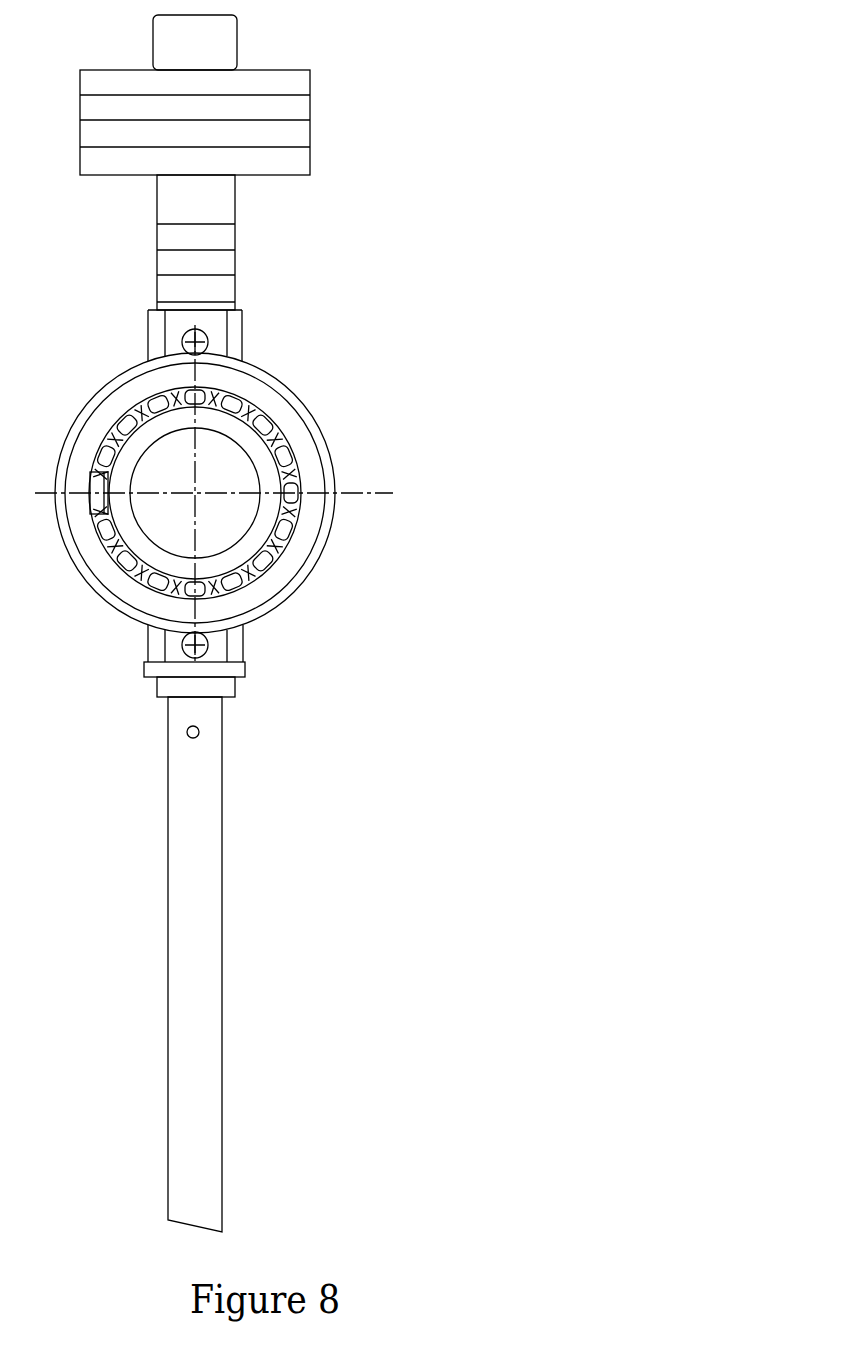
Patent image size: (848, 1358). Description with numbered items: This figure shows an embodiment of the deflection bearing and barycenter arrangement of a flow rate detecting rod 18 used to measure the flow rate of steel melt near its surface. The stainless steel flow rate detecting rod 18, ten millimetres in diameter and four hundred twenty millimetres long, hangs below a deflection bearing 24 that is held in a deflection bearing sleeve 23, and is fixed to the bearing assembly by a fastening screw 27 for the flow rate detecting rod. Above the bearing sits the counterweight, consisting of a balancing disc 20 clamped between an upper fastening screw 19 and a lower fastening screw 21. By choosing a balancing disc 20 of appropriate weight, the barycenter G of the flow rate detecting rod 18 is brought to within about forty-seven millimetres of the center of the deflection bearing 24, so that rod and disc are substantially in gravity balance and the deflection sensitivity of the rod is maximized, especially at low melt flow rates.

The flow rate detecting rod 18 is at (222, 862).
The upper fastening screw 19 is at (237, 37).
The balancing disc 20 is at (312, 145).
The lower fastening screw 21 is at (213, 343).
The deflection bearing sleeve 23 is at (337, 474).
The deflection bearing 24 is at (295, 536).
The fastening screw for the flow rate detecting rod 27 is at (207, 652).
The barycenter G is at (199, 736).